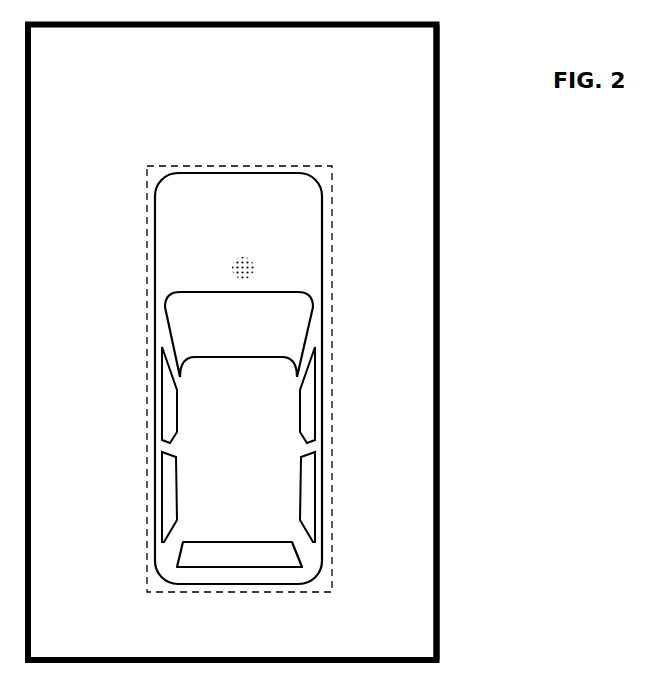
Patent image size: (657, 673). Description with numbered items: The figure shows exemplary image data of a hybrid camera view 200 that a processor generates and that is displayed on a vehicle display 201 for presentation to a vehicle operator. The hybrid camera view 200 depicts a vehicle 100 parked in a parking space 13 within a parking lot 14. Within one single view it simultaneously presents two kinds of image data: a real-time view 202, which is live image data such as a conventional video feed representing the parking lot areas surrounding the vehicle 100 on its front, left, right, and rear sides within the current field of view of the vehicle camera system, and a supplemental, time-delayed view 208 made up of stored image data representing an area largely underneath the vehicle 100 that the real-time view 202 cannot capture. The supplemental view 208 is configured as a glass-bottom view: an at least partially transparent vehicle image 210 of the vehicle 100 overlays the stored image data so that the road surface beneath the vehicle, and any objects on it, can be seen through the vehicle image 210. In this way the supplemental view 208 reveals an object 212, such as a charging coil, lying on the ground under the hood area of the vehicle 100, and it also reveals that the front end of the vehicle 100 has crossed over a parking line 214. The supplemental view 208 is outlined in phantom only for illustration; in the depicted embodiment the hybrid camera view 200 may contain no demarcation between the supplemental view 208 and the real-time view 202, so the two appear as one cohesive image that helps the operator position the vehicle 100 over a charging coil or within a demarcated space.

The hybrid camera view 200 is at (403, 62).
The vehicle display 201 is at (439, 170).
The real-time view 202 is at (422, 431).
The parking lot 14 is at (251, 71).
The parking space 13 is at (134, 472).
The vehicle 100 is at (259, 453).
The supplemental view 208 is at (332, 328).
The vehicle image 210 is at (307, 562).
The object 212 is at (253, 264).
The parking line 214 is at (252, 188).